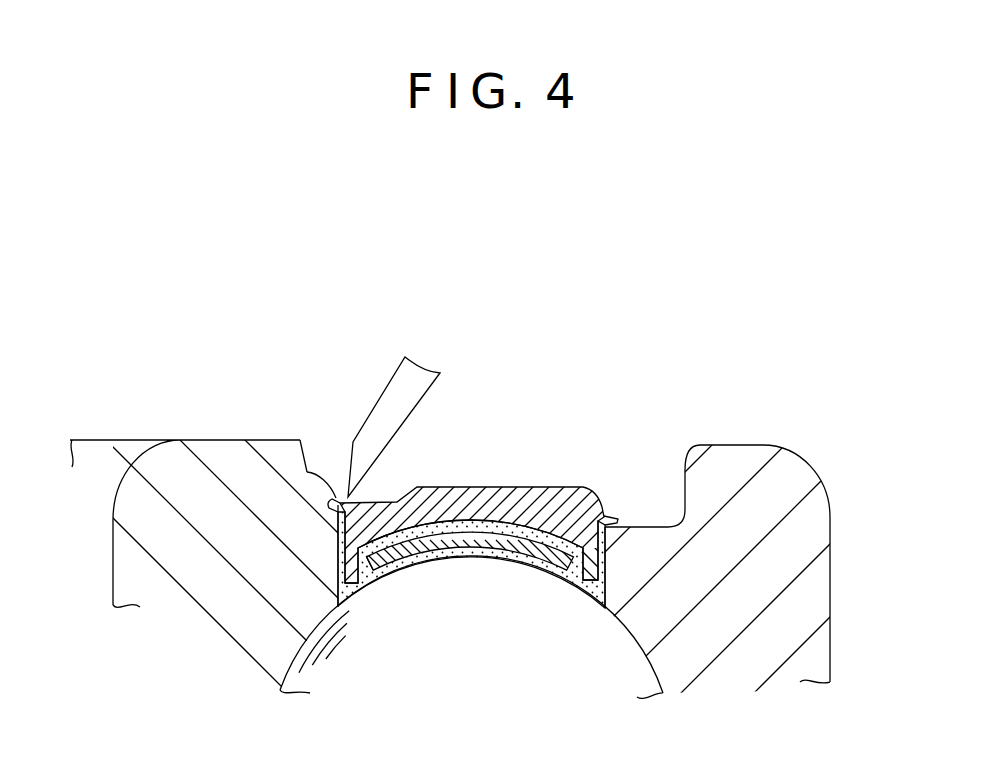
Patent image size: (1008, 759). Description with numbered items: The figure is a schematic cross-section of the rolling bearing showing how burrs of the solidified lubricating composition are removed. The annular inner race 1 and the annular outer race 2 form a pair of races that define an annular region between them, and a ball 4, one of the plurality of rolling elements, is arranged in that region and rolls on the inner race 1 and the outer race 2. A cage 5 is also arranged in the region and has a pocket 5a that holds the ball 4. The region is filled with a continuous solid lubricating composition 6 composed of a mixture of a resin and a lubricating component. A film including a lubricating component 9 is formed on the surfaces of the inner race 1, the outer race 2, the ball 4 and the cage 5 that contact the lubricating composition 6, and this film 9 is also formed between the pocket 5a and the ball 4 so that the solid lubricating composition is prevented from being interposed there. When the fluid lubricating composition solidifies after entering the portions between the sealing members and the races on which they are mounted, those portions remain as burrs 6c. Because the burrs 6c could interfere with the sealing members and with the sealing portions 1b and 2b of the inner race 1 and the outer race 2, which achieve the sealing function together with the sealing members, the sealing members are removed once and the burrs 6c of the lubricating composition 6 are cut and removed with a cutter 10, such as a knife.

The inner race 1 is at (108, 542).
The sealing portion of the inner race 1b is at (305, 455).
The outer race 2 is at (838, 580).
The sealing portion of the outer race 2b is at (660, 527).
The ball 4 is at (478, 652).
The cage 5 is at (529, 560).
The pocket 5a is at (398, 557).
The lubricating composition 6 is at (497, 487).
The burr 6c is at (305, 473).
The film including a lubricating component 9 is at (560, 575).
The cutter 10 is at (410, 397).